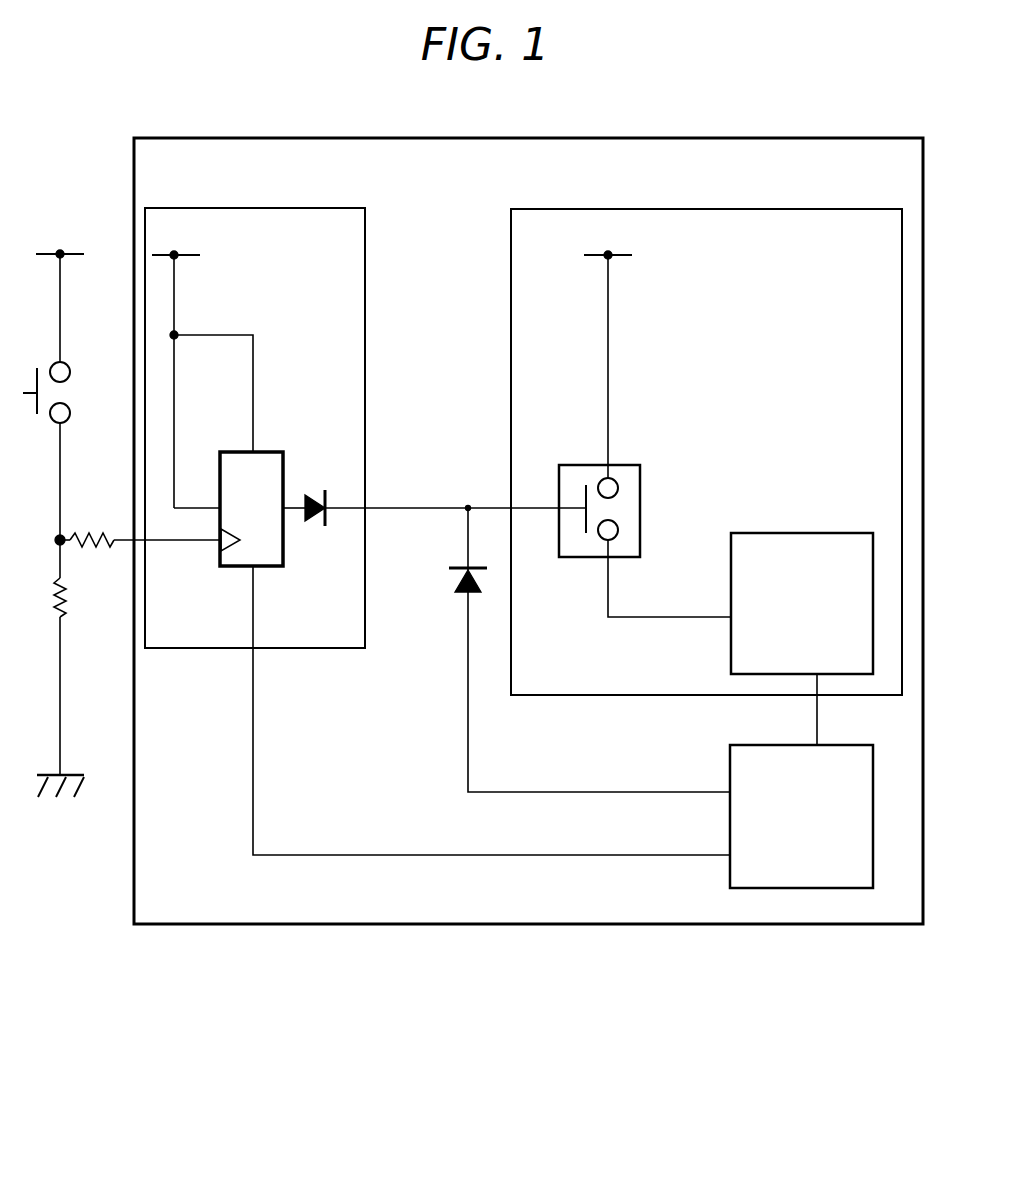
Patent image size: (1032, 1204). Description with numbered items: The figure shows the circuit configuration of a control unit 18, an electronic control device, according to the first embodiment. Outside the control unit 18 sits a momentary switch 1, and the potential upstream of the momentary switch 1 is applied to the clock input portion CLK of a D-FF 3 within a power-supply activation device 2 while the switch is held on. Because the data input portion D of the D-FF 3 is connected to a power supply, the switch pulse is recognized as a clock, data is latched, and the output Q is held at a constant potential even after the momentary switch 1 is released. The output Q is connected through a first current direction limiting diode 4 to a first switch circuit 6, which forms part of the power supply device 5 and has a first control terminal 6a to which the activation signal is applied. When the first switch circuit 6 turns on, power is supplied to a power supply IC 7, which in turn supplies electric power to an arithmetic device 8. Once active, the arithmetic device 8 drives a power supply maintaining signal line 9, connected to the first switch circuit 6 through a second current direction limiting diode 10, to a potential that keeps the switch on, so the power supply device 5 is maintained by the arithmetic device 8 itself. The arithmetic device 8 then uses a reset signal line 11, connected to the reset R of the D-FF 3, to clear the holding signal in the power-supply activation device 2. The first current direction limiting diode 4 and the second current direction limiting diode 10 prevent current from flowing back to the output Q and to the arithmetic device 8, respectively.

The momentary switch 1 is at (45, 363).
The power-supply activation device 2 is at (305, 254).
The D-FF (D type flip-flop) 3 is at (277, 450).
The first current direction limiting diode 4 is at (331, 493).
The power supply device 5 is at (542, 250).
The first switch circuit 6 is at (633, 467).
The first control terminal 6a is at (577, 508).
The power supply IC 7 is at (775, 553).
The arithmetic device 8 is at (817, 863).
The power supply maintaining signal line 9 is at (465, 758).
The second current direction limiting diode 10 is at (458, 582).
The reset signal line 11 is at (250, 798).
The control unit 18 is at (565, 892).